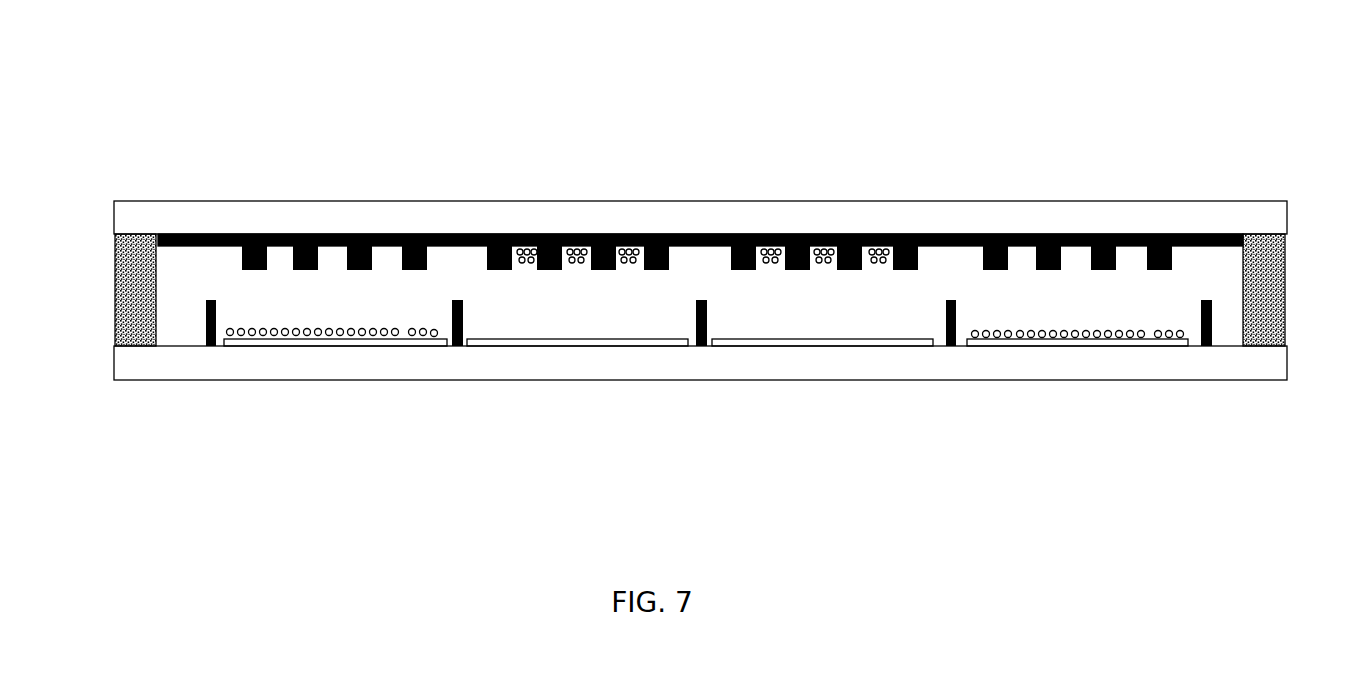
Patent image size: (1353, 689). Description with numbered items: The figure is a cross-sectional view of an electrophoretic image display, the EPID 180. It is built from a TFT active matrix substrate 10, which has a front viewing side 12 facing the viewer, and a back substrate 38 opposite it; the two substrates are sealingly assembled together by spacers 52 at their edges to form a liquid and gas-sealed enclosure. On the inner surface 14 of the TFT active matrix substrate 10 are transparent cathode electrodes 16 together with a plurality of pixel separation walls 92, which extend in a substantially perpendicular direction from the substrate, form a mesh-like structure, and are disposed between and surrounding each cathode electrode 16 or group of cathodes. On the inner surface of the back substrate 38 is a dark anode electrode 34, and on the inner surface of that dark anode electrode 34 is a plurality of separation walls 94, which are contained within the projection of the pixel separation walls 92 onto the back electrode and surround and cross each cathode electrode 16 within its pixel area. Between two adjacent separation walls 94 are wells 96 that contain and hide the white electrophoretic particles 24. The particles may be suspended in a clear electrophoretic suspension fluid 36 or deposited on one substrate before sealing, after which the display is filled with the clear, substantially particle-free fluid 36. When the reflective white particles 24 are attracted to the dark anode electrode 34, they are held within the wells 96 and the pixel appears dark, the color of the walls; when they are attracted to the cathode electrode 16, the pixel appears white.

The EPID 180 is at (654, 137).
The front viewing side 12 is at (667, 405).
The TFT active matrix substrate 10 is at (313, 372).
The inner surface 14 is at (170, 345).
The back substrate 38 is at (245, 212).
The spacers 52 is at (113, 300).
The dark anode electrode 34 is at (213, 247).
The wells 96 is at (388, 250).
The separation walls 94 is at (359, 272).
The pixel separation walls 92 is at (709, 316).
The transparent cathode electrodes 16 is at (1053, 346).
The white electrophoretic particles 24 is at (403, 322).
The electrophoretic suspension fluid 36 is at (580, 309).